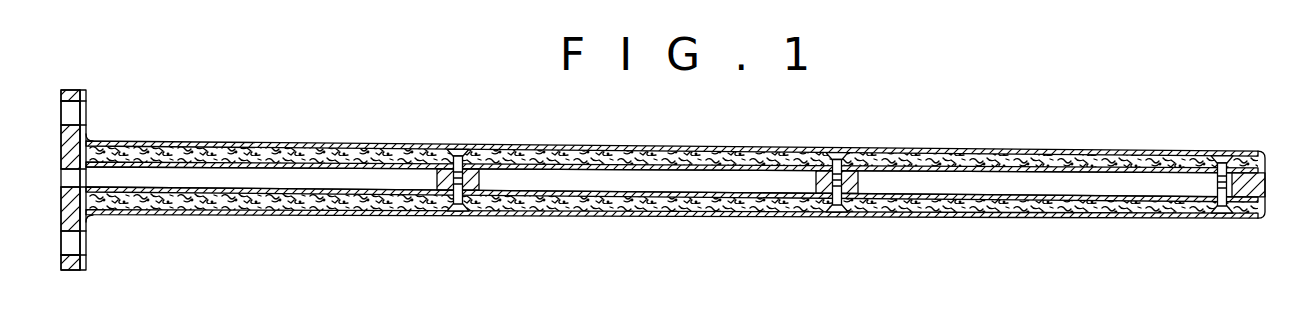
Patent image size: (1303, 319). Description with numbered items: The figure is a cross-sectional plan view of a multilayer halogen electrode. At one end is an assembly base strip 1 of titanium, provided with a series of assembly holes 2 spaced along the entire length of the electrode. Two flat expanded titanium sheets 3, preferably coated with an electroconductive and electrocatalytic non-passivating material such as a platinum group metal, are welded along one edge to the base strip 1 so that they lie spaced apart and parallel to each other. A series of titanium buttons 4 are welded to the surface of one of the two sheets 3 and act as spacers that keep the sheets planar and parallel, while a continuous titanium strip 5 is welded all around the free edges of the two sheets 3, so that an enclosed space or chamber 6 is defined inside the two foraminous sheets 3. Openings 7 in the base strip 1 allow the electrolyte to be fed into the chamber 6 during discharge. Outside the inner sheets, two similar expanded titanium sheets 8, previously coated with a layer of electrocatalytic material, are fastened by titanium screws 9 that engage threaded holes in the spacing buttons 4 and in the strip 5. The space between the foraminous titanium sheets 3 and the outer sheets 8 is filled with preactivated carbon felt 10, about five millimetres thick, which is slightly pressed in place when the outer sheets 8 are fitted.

The assembly base strip 1 is at (71, 269).
The assembly holes 2 is at (73, 117).
The flat expanded titanium sheets 3 is at (237, 171).
The titanium buttons 4 is at (479, 186).
The continuous titanium strip 5 is at (1265, 183).
The enclosed space or chamber 6 is at (622, 183).
The openings 7 is at (73, 179).
The expanded titanium sheets 8 is at (745, 151).
The titanium screws 9 is at (459, 151).
The preactivated carbon felt 10 is at (395, 158).